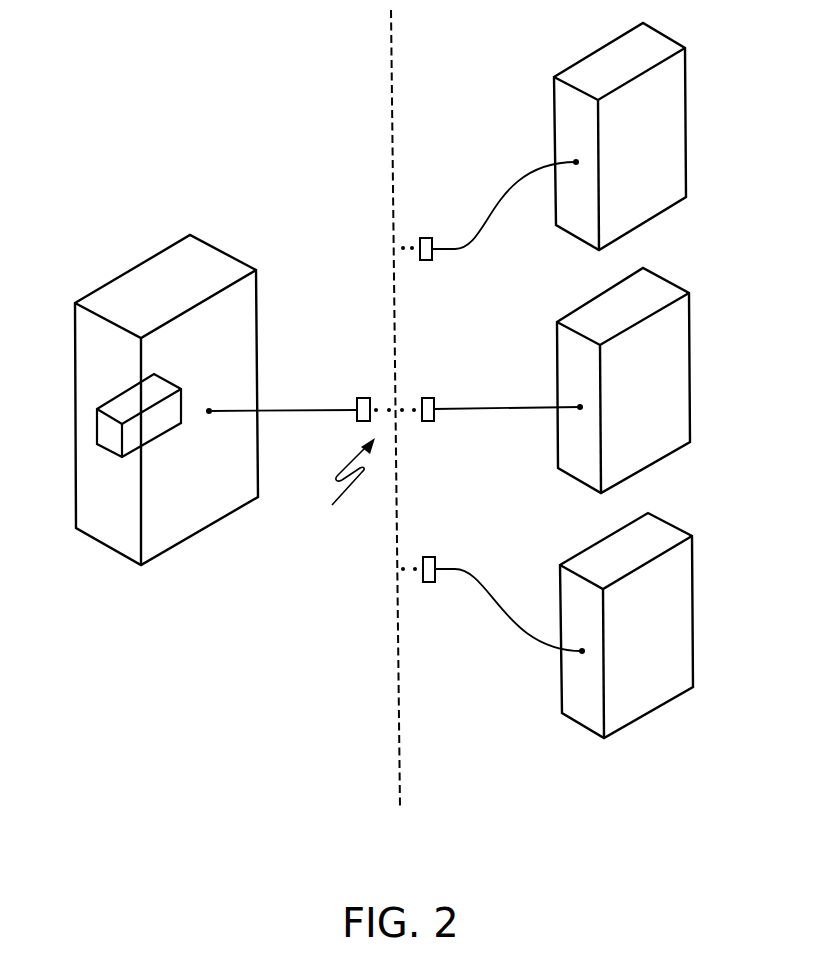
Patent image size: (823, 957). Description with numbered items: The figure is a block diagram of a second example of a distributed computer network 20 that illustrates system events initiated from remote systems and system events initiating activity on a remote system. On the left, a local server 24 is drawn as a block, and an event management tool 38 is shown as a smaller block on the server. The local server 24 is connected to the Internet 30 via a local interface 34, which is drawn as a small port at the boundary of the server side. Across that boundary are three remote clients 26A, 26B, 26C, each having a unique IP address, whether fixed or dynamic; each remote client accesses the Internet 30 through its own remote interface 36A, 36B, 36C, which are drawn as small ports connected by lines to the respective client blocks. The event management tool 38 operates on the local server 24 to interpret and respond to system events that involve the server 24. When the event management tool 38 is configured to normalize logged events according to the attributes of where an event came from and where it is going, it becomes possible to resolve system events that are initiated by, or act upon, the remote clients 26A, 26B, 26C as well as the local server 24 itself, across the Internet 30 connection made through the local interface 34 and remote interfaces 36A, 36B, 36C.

The distributed computer network 20 is at (188, 118).
The local server 24 is at (197, 525).
The event management tool 38 is at (107, 427).
The local interface 34 is at (365, 398).
The Internet 30 is at (337, 489).
The remote interface 36A is at (427, 238).
The remote interface 36B is at (428, 398).
The remote interface 36C is at (430, 557).
The remote client 26A is at (688, 122).
The remote client 26B is at (693, 363).
The remote client 26C is at (693, 618).